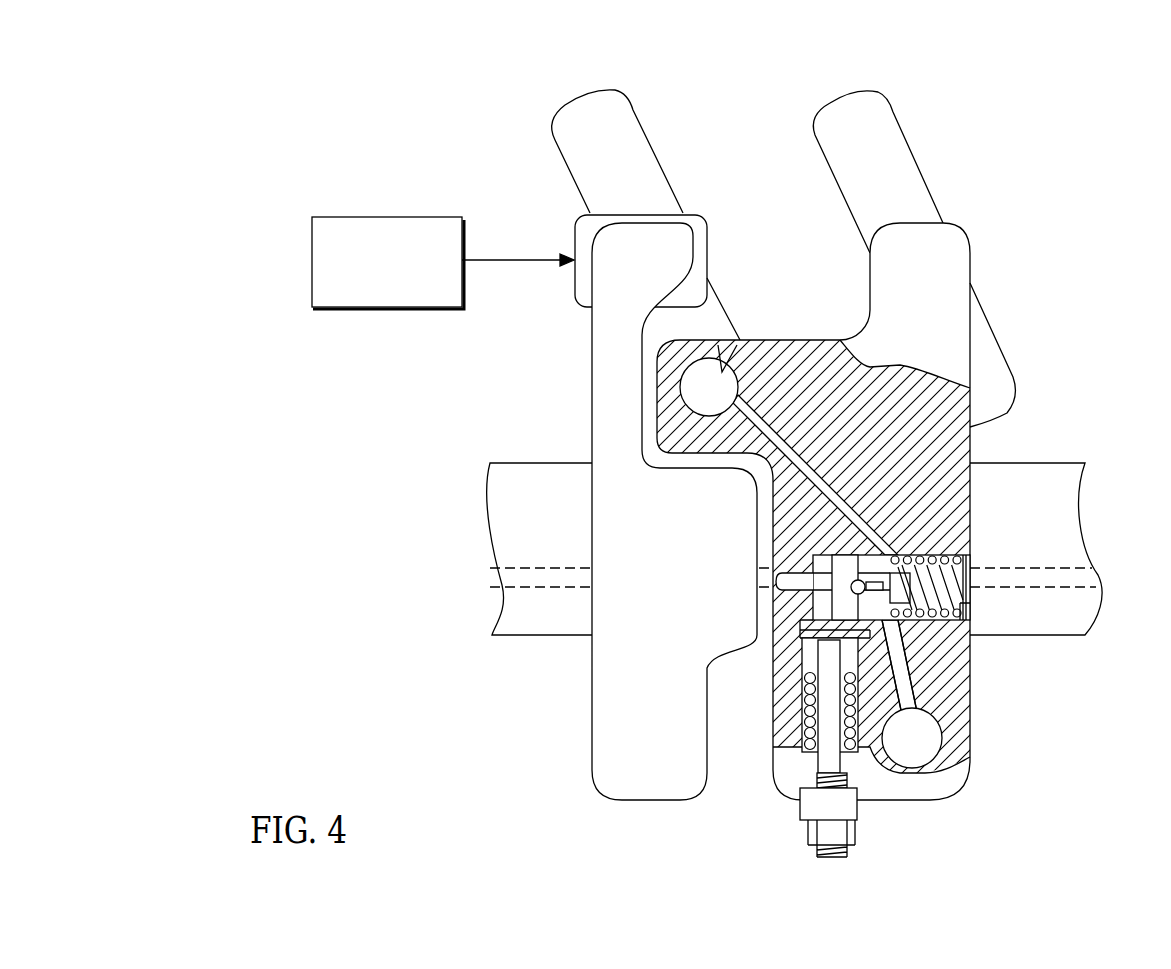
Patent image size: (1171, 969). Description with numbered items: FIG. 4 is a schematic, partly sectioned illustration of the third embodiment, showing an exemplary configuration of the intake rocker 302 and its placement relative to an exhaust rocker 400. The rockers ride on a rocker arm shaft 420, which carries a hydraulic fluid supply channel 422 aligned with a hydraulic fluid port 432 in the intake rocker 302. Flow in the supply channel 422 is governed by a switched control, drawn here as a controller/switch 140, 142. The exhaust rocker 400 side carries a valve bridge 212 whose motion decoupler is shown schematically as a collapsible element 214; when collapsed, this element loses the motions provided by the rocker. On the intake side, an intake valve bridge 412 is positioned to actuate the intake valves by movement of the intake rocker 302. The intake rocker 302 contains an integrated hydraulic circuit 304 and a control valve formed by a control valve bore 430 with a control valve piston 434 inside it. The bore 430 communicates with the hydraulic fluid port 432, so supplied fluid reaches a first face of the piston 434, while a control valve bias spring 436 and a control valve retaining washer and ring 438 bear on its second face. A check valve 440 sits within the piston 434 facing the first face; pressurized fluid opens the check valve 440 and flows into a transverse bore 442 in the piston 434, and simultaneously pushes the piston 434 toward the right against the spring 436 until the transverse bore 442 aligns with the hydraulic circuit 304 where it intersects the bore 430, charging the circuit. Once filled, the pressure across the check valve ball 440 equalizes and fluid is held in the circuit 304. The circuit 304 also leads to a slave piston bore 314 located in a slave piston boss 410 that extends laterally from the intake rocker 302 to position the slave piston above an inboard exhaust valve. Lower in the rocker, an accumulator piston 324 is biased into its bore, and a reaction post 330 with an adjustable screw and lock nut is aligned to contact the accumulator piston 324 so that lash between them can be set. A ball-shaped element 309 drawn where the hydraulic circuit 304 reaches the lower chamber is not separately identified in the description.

The controller 140 is at (443, 237).
The switch 142 is at (387, 216).
The valve bridge 212 is at (581, 98).
The collapsible element 214 is at (686, 214).
The intake rocker arm 302 is at (970, 258).
The hydraulic circuit 304 is at (752, 426).
The ball 309 is at (928, 745).
The slave piston bore 314 is at (746, 340).
The accumulator piston 324 is at (828, 762).
The reaction post 330 is at (790, 836).
The exhaust rocker 400 is at (661, 549).
The slave piston boss 410 is at (718, 345).
The intake valve bridge 412 is at (856, 90).
The rocker arm shaft 420 is at (544, 463).
The hydraulic fluid supply channel 422 is at (1100, 583).
The control valve bore 430 is at (772, 640).
The hydraulic fluid port 432 is at (780, 580).
The control valve piston 434 is at (968, 610).
The control valve bias spring 436 is at (947, 555).
The control valve retaining washer and ring 438 is at (970, 560).
The check valve 440 is at (853, 584).
The transverse bore 442 is at (886, 626).